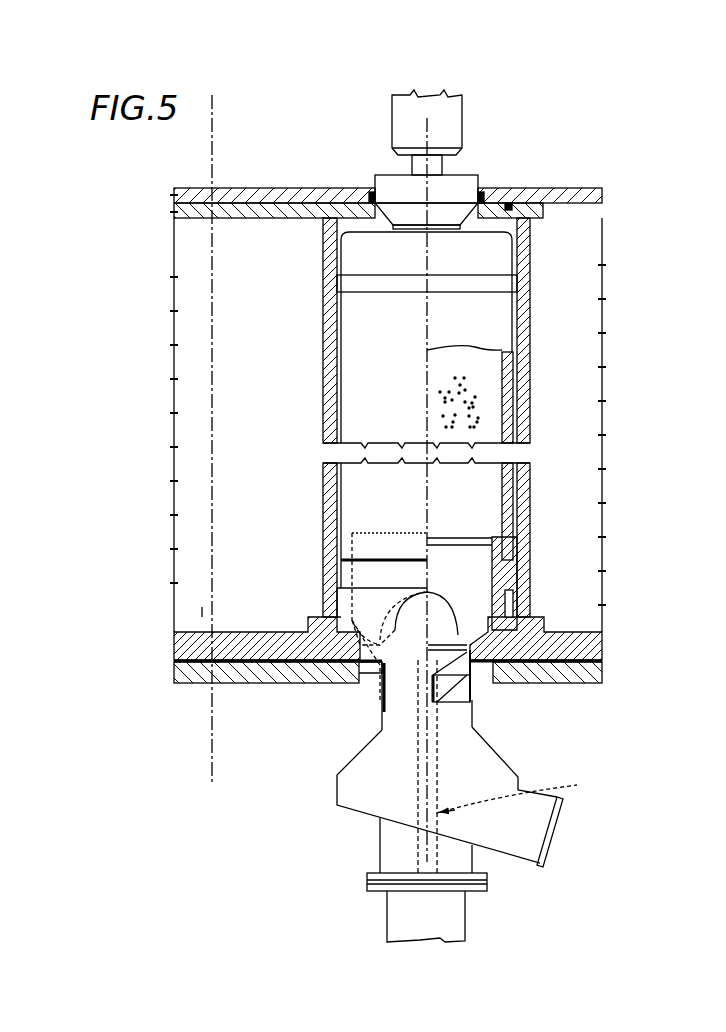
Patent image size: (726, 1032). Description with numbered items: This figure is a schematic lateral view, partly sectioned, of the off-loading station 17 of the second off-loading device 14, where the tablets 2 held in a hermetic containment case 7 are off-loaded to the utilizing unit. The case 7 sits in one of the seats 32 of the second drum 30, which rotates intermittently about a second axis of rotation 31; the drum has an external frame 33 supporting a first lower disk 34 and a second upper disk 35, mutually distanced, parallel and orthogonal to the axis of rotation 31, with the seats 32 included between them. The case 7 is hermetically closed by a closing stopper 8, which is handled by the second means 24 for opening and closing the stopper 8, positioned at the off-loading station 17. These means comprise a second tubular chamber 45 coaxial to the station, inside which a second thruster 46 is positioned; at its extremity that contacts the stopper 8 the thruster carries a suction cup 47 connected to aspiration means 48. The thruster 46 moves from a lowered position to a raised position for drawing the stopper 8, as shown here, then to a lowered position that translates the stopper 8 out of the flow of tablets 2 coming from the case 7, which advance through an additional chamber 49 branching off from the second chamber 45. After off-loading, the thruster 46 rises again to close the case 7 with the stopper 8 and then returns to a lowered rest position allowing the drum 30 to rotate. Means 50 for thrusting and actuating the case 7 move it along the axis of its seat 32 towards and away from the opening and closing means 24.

The tablets 2 is at (482, 403).
The hermetic containment case 7 is at (513, 378).
The closing stopper 8 is at (447, 642).
The second off-loading device 14 is at (312, 285).
The off-loading station 17 is at (310, 750).
The second means for opening and closing the stopper 24 is at (447, 686).
The second drum 30 is at (318, 490).
The second axis of rotation 31 is at (212, 749).
The seats 32 is at (317, 423).
The external frame 33 is at (580, 183).
The first lower disk 34 is at (192, 648).
The second upper disk 35 is at (200, 212).
The second tubular chamber 45 is at (373, 706).
The second thruster 46 is at (415, 766).
The suction cup 47 is at (462, 680).
The aspiration means 48 is at (405, 905).
The additional chamber 49 is at (520, 857).
The means for thrusting and actuating the case 50 is at (382, 127).